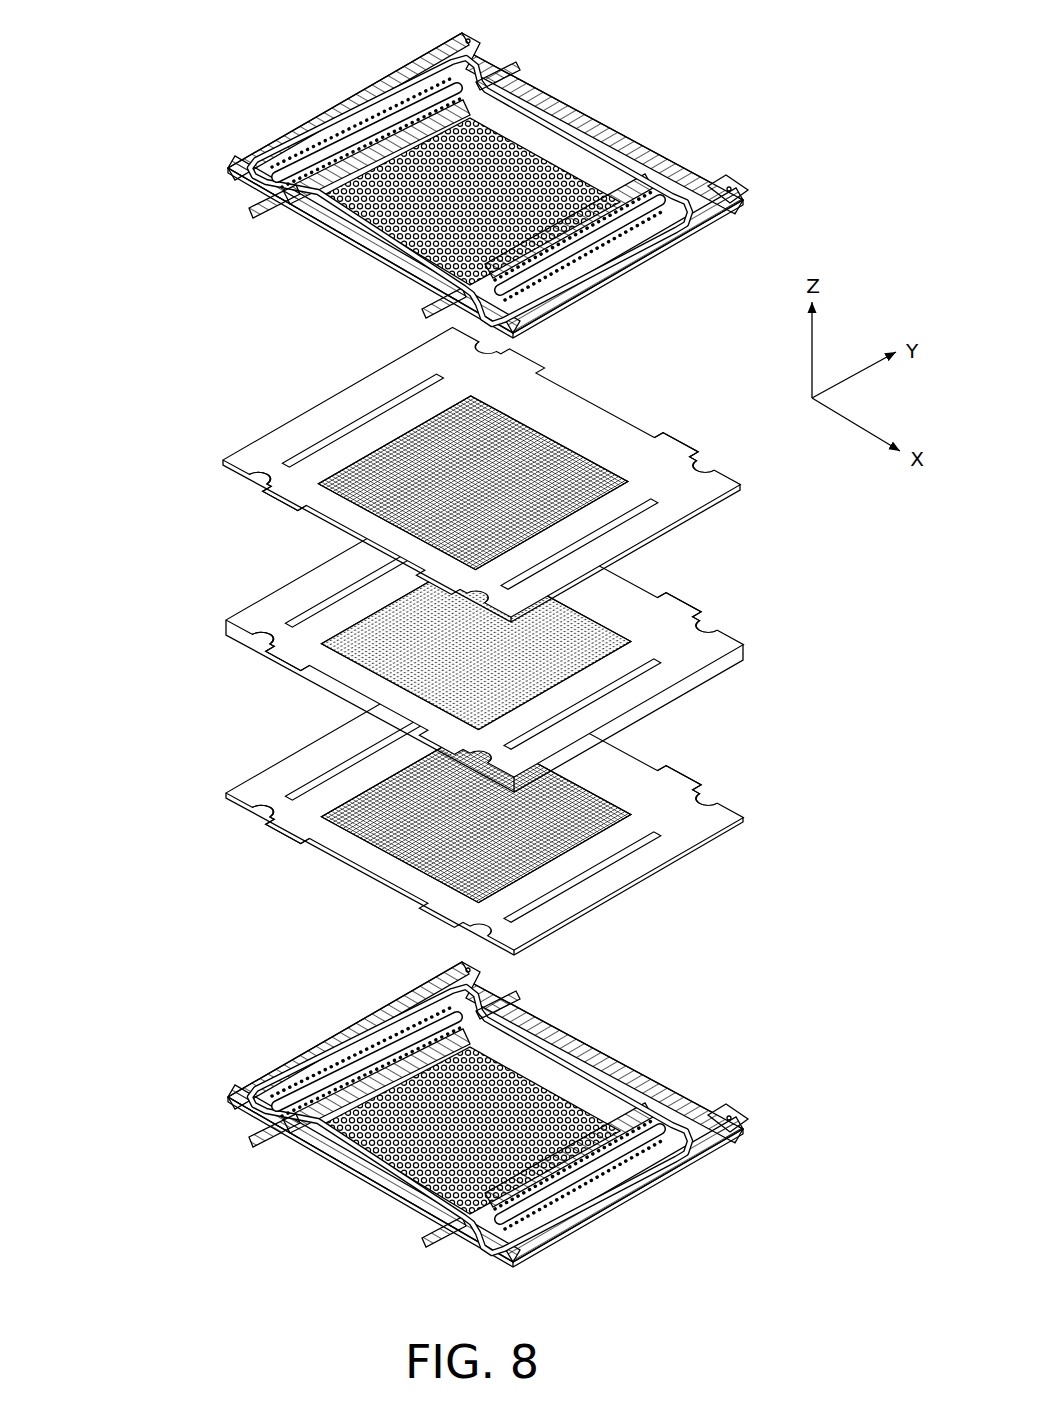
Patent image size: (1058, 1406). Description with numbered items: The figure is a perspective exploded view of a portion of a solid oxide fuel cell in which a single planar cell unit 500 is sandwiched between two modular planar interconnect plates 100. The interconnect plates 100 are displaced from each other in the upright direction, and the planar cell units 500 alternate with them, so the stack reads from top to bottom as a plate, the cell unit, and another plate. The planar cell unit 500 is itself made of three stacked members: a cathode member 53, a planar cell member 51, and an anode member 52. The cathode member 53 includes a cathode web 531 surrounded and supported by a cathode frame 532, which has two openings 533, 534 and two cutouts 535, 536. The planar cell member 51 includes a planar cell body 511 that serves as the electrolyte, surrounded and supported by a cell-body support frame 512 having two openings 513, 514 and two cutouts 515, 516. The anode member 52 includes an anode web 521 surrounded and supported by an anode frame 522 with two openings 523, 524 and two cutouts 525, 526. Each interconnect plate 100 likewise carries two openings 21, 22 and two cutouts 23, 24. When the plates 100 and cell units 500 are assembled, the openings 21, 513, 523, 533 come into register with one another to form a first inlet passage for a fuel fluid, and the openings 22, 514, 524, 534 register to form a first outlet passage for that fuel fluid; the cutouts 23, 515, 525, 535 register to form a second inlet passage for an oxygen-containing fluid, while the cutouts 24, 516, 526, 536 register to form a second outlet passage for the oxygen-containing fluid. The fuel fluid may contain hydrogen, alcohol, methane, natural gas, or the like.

The modular planar interconnect plate 100 is at (262, 105).
The opening 21 is at (432, 90).
The opening 22 is at (648, 212).
The cutout 23 is at (513, 78).
The cutout 24 is at (277, 218).
The planar cell unit 500 is at (158, 416).
The cathode member 53 is at (247, 492).
The cathode web 531 is at (343, 478).
The cathode frame 532 is at (338, 453).
The opening 533 is at (367, 420).
The opening 534 is at (640, 517).
The cutout 535 is at (665, 458).
The cutout 536 is at (283, 510).
The planar cell member 51 is at (245, 662).
The planar cell body 511 is at (367, 642).
The cell-body support frame 512 is at (327, 617).
The opening 513 is at (320, 600).
The opening 514 is at (643, 668).
The cutout 515 is at (668, 610).
The cutout 516 is at (282, 678).
The anode member 52 is at (245, 818).
The anode web 521 is at (358, 812).
The anode frame 522 is at (327, 795).
The opening 523 is at (317, 777).
The opening 524 is at (630, 850).
The cutout 525 is at (668, 783).
The cutout 526 is at (283, 833).